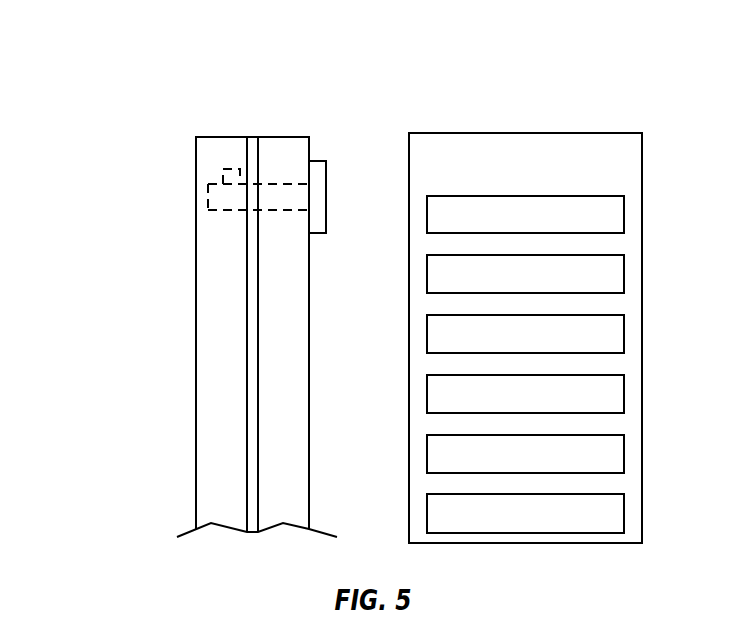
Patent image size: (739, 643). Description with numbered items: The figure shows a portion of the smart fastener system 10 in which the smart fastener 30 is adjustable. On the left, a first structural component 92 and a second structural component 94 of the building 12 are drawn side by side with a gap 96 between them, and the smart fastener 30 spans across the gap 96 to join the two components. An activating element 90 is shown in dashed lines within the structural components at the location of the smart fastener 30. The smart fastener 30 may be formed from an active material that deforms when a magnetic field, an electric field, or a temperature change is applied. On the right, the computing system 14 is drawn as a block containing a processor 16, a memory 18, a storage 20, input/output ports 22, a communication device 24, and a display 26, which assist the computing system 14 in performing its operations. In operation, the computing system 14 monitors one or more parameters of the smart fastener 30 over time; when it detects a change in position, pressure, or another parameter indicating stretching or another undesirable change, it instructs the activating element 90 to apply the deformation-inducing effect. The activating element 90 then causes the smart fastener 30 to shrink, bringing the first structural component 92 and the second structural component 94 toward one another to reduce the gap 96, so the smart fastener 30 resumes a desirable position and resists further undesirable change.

The smart fastener system 10 is at (124, 74).
The building 12 is at (283, 137).
The computing system 14 is at (525, 133).
The processor 16 is at (624, 210).
The memory 18 is at (624, 269).
The storage 20 is at (624, 329).
The input/output (I/O) ports 22 is at (624, 389).
The communication device 24 is at (624, 449).
The display 26 is at (624, 508).
The smart fastener 30 is at (326, 192).
The activating element 90 is at (233, 165).
The first structural component 92 is at (309, 333).
The second structural component 94 is at (196, 333).
The gap 96 is at (252, 417).